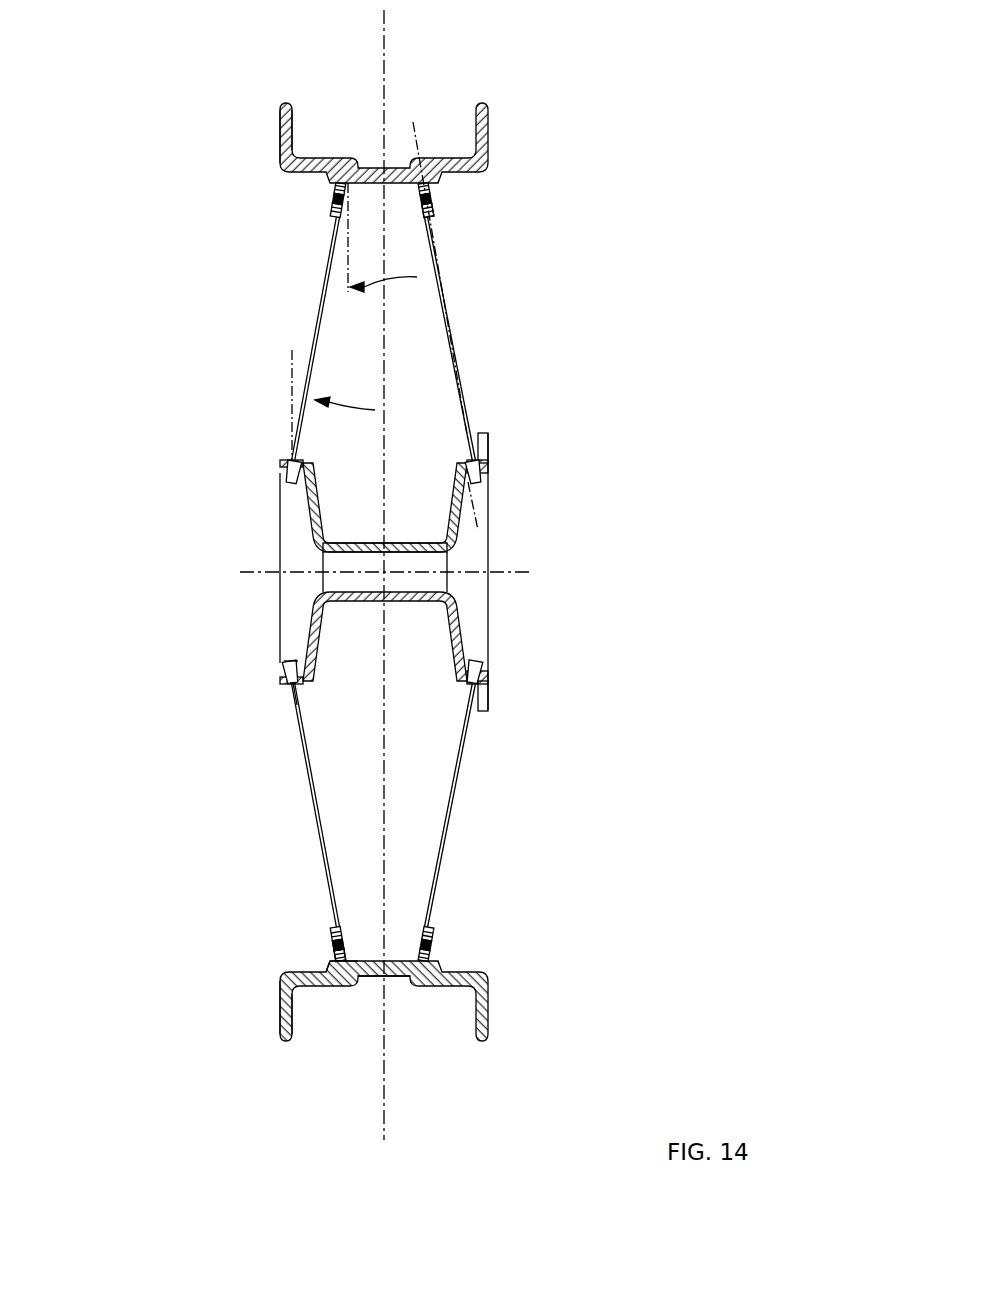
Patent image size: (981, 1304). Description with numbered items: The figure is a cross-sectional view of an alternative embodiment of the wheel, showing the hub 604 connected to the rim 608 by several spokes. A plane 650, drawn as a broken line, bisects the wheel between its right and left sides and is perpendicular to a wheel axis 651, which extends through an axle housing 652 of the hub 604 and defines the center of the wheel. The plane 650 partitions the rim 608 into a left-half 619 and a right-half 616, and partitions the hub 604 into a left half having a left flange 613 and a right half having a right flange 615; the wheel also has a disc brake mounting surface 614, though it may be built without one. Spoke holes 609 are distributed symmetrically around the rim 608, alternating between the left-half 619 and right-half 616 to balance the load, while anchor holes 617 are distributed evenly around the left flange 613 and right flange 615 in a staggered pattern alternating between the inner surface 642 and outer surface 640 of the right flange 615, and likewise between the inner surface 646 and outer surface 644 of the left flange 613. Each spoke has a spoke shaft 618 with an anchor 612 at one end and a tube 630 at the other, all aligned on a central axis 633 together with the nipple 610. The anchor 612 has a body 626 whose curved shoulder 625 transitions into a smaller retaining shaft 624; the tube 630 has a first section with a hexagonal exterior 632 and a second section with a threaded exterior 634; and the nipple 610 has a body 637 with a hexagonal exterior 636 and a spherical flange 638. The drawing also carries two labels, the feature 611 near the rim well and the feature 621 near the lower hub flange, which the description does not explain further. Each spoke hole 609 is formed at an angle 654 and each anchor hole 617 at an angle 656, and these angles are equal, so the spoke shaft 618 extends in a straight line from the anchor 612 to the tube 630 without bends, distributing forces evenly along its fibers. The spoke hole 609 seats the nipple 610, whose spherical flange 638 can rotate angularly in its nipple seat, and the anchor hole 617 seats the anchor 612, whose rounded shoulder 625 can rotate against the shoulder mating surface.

The hub 604 is at (414, 607).
The rim 608 is at (398, 1043).
The spoke hole 609 is at (330, 984).
The nipple 610 is at (432, 185).
The rim well 611 is at (360, 983).
The anchor 612 is at (468, 478).
The left flange 613 is at (323, 607).
The disc brake mounting surface 614 is at (488, 693).
The right flange 615 is at (443, 518).
The right-half 616 is at (395, 127).
The anchor hole 617 is at (303, 684).
The spoke shaft 618 is at (407, 554).
The left-half 619 is at (279, 128).
The spoke head 621 is at (302, 682).
The retaining shaft 624 is at (295, 683).
The curved shoulder 625 is at (293, 680).
The body 626 is at (283, 672).
The tube 630 is at (432, 212).
The hexagonal exterior 632 is at (335, 935).
The central axis 633 is at (420, 138).
The threaded exterior 634 is at (337, 948).
The hexagonal exterior 636 is at (340, 960).
The body 637 is at (345, 968).
The spherical flange 638 is at (347, 978).
The outer surface 640 is at (478, 472).
The inner surface 642 is at (460, 488).
The outer surface 644 is at (283, 467).
The inner surface 646 is at (284, 490).
The plane 650 is at (383, 130).
The wheel axis 651 is at (297, 560).
The axle housing 652 is at (323, 547).
The angle 654 is at (318, 280).
The angle 656 is at (289, 395).